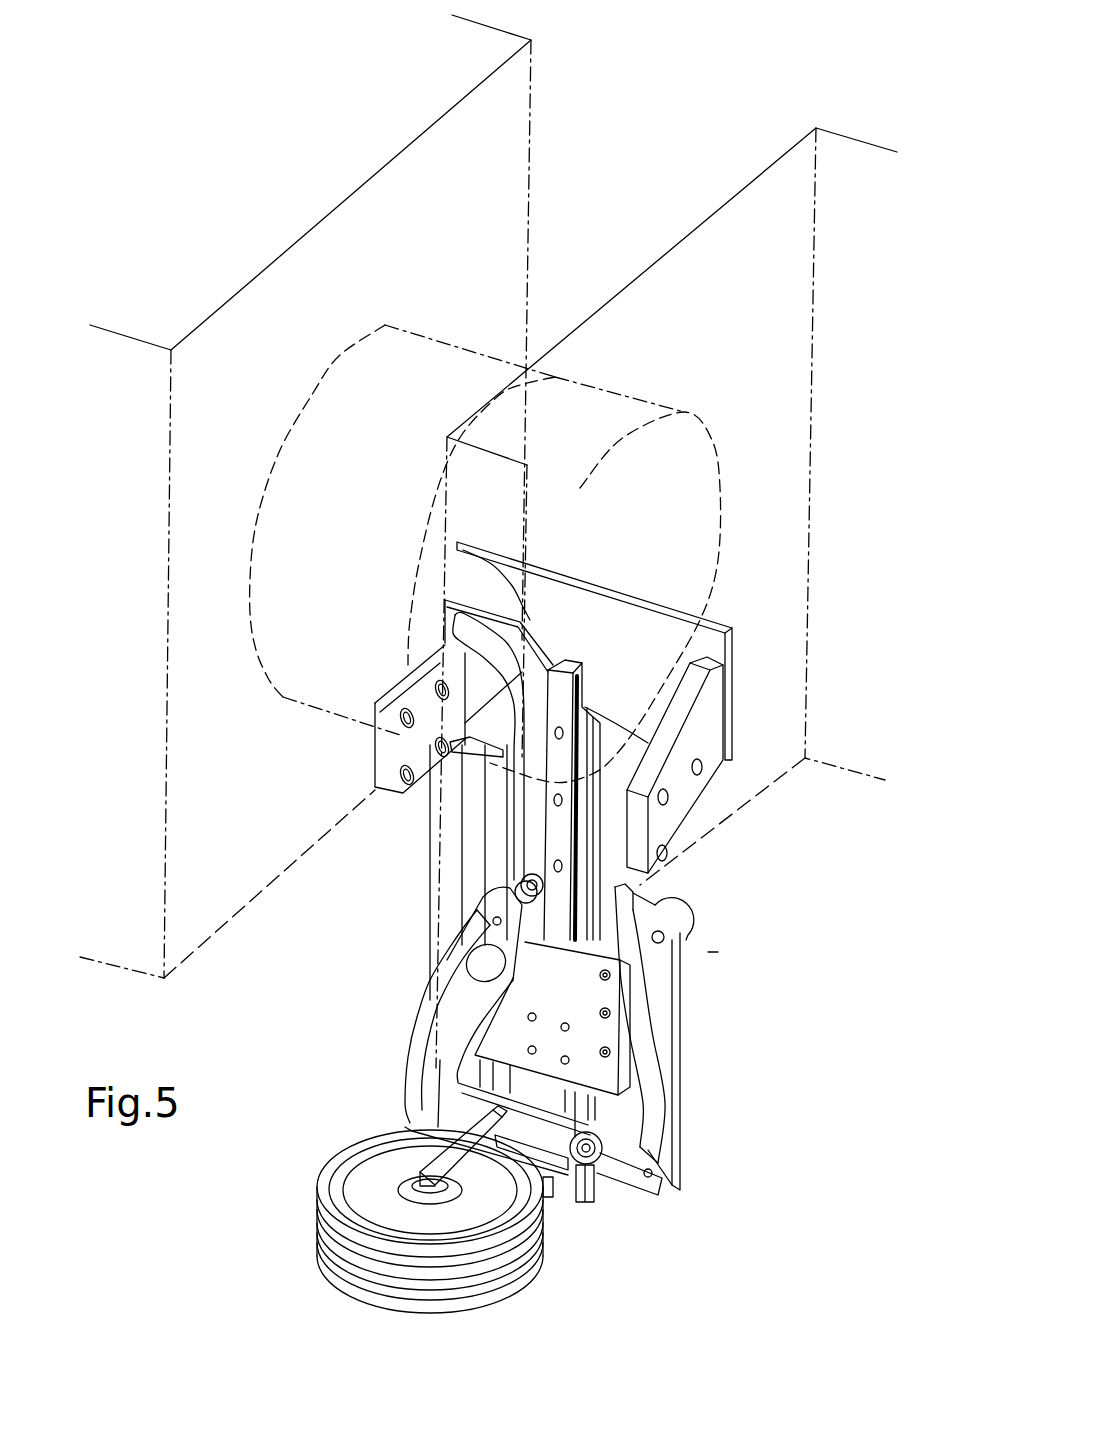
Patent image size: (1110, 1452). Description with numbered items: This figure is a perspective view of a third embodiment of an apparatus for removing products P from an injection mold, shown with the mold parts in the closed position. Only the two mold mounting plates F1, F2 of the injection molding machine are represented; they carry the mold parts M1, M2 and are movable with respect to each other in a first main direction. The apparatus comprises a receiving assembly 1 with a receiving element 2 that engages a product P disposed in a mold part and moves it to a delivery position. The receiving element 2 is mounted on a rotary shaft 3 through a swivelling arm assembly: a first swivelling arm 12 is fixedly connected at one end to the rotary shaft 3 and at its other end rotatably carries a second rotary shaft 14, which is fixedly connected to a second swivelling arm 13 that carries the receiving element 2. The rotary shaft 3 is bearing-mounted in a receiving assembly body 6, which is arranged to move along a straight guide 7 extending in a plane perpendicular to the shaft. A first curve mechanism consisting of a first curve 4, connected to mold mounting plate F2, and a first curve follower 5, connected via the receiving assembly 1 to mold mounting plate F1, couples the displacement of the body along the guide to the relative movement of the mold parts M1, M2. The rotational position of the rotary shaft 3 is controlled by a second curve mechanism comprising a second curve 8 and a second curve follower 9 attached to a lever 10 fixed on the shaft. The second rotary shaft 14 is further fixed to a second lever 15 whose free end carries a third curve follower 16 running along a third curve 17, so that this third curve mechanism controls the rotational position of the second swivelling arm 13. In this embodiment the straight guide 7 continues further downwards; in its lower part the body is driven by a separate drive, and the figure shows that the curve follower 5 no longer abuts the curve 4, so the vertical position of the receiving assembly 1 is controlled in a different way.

The receiving assembly 1 is at (705, 1029).
The receiving element 2 is at (490, 1202).
The rotary shaft 3 is at (478, 967).
The first curve 4 is at (608, 643).
The first curve follower 5 is at (688, 920).
The receiving assembly body 6 is at (568, 1007).
The straight guide 7 is at (562, 693).
The second curve 8 is at (530, 810).
The second curve follower 9 is at (515, 884).
The lever 10 is at (477, 931).
The first swivelling arm 12 is at (424, 1037).
The second swivelling arm 13 is at (590, 1195).
The second rotary shaft 14 is at (636, 1195).
The second lever 15 is at (660, 1173).
The third curve follower 16 is at (652, 1155).
The third curve 17 is at (662, 1110).
The product P is at (503, 1272).
The mold mounting plate F1 is at (462, 212).
The mold mounting plate F2 is at (781, 301).
The mold part M1 is at (362, 502).
The mold part M2 is at (586, 426).